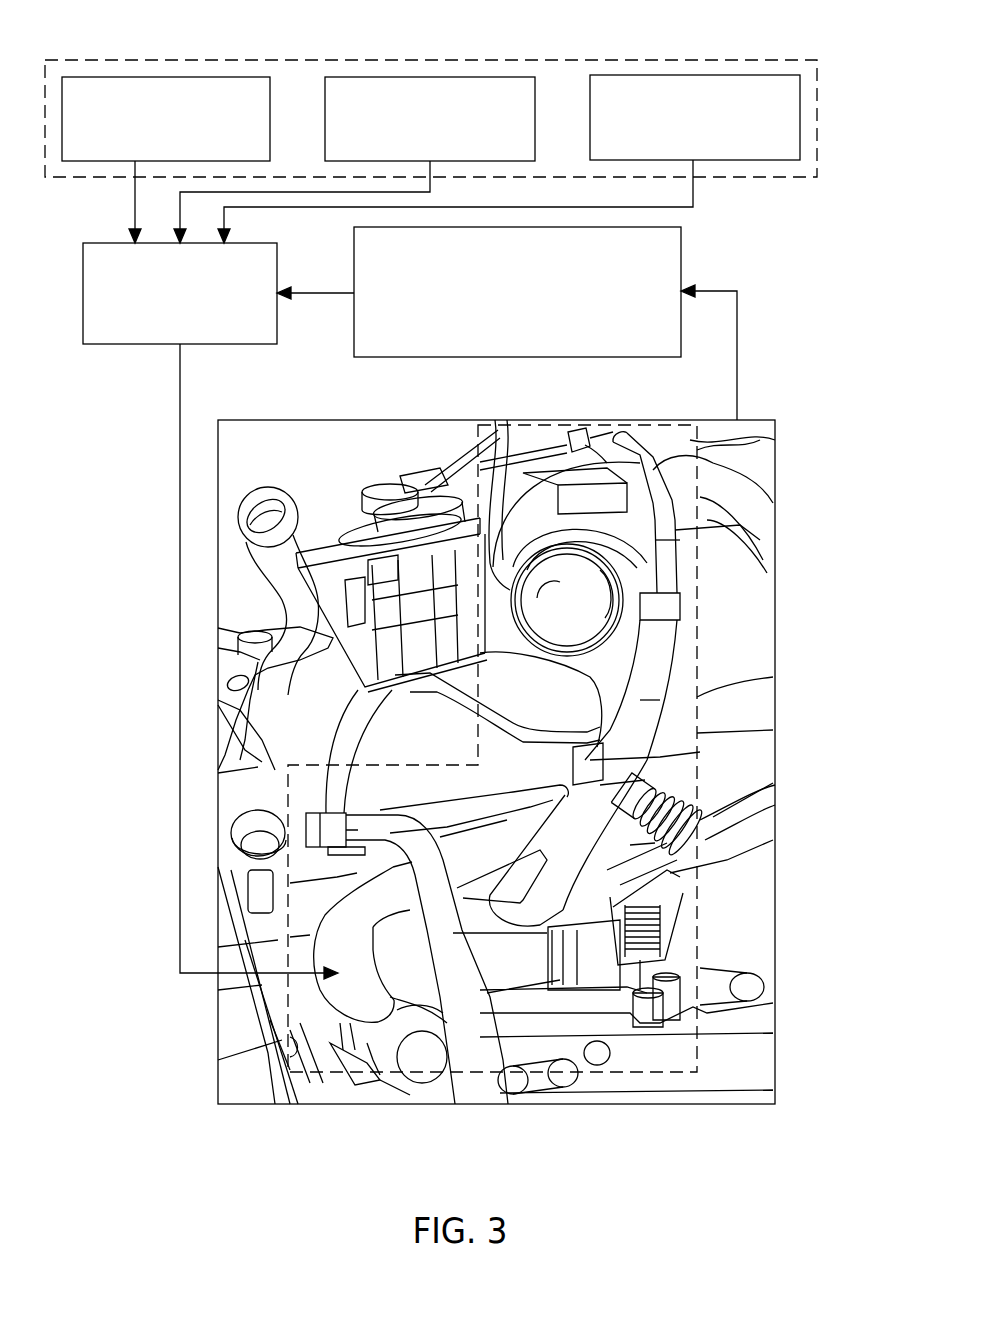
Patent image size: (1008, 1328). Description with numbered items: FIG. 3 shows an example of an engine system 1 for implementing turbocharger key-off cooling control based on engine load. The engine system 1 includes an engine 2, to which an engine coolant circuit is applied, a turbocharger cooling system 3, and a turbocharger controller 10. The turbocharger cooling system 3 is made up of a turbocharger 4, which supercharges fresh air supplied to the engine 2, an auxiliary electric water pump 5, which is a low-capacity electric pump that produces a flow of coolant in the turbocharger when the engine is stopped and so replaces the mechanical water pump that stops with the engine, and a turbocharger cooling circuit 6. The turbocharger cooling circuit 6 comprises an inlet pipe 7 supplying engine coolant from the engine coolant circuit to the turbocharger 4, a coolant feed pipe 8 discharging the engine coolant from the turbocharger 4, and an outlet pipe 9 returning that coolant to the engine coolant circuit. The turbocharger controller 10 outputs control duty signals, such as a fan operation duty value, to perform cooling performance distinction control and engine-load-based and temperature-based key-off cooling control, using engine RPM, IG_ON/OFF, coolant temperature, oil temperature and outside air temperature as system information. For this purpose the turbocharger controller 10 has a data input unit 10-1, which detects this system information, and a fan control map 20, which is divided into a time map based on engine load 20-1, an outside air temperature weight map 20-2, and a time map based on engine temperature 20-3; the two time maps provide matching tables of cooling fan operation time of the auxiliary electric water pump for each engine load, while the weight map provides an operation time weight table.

The engine system 1 is at (657, 1110).
The engine 2 is at (278, 1078).
The turbocharger cooling system 3 is at (713, 460).
The turbocharger 4 is at (492, 420).
The auxiliary electric water pump 5 is at (397, 1090).
The turbocharger cooling circuit 6 is at (830, 555).
The inlet pipe 7 is at (640, 845).
The coolant feed pipe 8 is at (667, 547).
The outlet pipe 9 is at (652, 703).
The turbocharger controller 10 is at (130, 344).
The data input unit 10-1 is at (681, 253).
The fan control map 20 is at (817, 133).
The time map based on engine load 20-1 is at (165, 77).
The outside air temperature weight map 20-2 is at (428, 77).
The time map based on engine temperature 20-3 is at (693, 75).